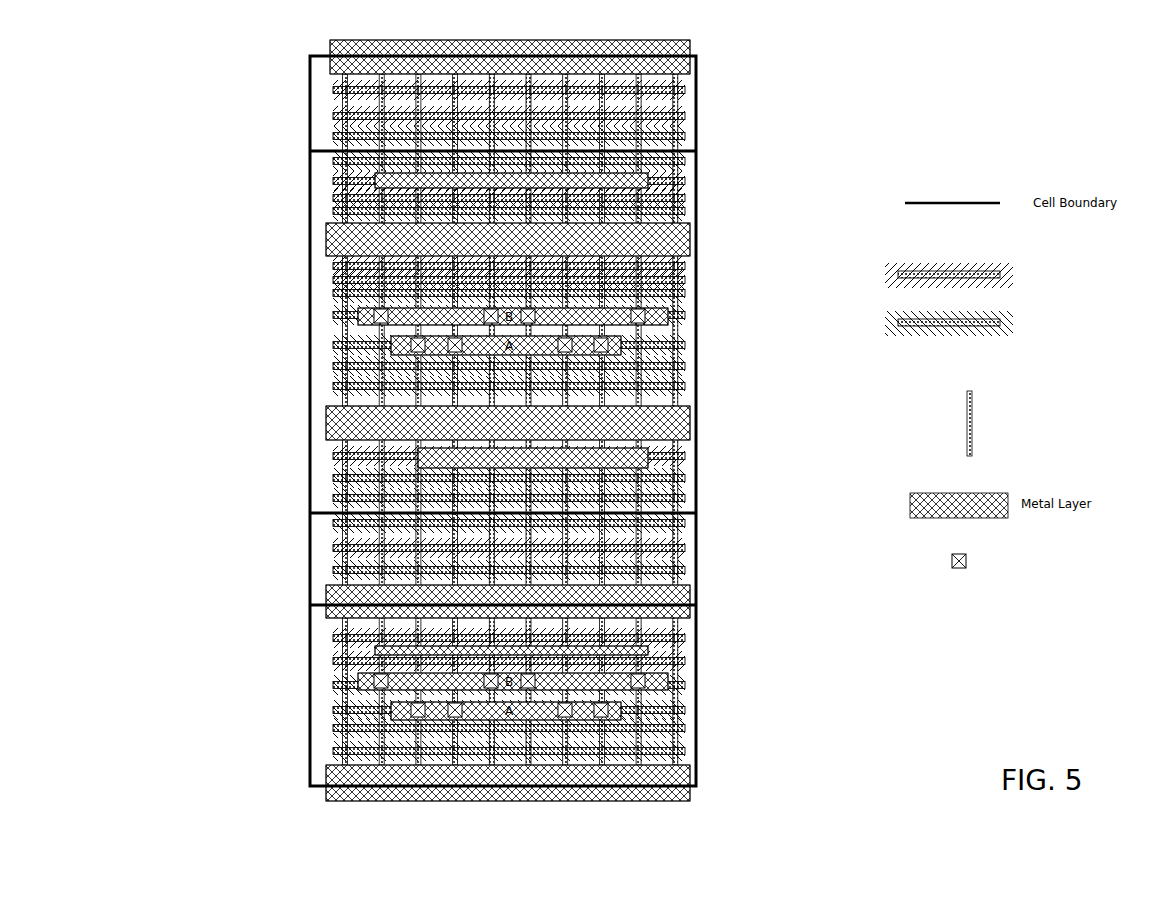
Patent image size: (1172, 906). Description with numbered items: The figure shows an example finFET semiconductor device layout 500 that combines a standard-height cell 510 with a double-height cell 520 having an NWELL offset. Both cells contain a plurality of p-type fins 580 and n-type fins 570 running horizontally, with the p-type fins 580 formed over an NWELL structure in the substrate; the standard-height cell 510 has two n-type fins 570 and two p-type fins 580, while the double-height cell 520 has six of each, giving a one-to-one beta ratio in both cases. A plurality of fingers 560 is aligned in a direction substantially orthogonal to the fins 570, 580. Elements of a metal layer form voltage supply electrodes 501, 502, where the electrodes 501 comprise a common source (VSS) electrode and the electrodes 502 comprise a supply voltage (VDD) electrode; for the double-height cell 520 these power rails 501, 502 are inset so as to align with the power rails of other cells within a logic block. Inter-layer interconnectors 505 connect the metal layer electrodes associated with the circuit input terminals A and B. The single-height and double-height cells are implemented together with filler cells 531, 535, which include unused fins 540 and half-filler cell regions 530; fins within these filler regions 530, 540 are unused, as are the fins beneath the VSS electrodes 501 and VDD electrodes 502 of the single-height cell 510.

The example finFET semiconductor device layout 500 is at (906, 34).
The voltage supply electrode 501 is at (320, 33).
The voltage supply electrode 502 is at (318, 230).
The inter-layer interconnector 505 is at (757, 513).
The standard-height cell 510 is at (702, 600).
The double-height cell 520 is at (702, 152).
The half-filler cell region 530 is at (712, 80).
The filler cell 531 is at (299, 532).
The filler cell 535 is at (297, 105).
The unused fins 540 is at (712, 125).
The finger 560 is at (696, 419).
The n-type fin 570 is at (1009, 323).
The p-type fin 580 is at (1007, 275).